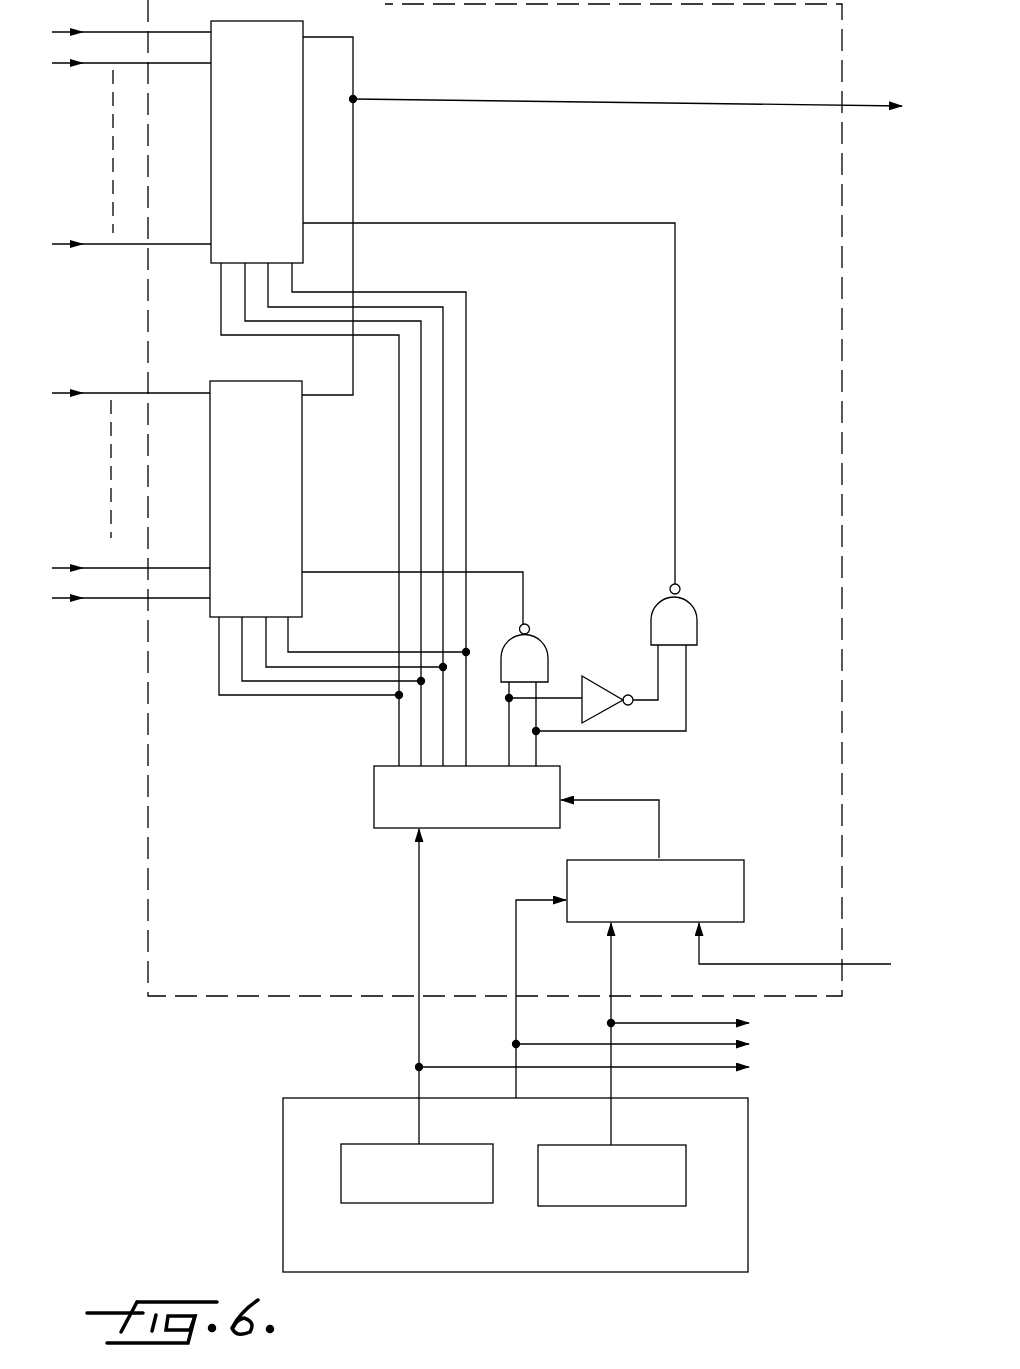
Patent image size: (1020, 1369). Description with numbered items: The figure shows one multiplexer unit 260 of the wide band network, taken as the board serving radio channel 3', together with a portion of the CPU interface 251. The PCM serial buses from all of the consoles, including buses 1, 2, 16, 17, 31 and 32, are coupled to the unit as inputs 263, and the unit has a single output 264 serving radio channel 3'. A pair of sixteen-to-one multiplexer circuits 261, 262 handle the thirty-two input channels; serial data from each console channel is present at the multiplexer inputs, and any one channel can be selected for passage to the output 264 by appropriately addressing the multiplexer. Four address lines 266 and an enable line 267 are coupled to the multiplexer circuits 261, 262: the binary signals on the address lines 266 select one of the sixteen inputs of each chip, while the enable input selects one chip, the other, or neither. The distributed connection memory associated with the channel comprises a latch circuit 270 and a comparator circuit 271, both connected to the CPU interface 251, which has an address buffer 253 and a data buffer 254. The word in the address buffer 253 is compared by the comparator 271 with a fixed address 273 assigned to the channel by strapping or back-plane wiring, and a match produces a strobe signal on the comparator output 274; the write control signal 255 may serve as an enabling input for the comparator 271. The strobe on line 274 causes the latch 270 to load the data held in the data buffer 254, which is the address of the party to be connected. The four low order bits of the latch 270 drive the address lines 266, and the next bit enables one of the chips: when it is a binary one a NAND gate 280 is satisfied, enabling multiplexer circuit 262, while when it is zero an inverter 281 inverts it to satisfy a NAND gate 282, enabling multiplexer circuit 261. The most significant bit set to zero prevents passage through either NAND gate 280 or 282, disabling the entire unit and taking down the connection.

The PCM serial bus 1 is at (131, 22).
The PCM serial bus 2 is at (131, 53).
The PCM serial bus 16 is at (131, 255).
The PCM serial bus 17 is at (131, 382).
The PCM serial bus 31 is at (131, 557).
The PCM serial bus 32 is at (131, 587).
The radio channel 3' is at (873, 90).
The CPU interface 251 is at (283, 1144).
The address buffer 253 is at (650, 1145).
The data buffer 254 is at (372, 1144).
The write control signal 255 is at (516, 1033).
The multiplexer unit 260 is at (140, 772).
The multiplexer circuit 261 is at (211, 167).
The multiplexer circuit 262 is at (210, 474).
The inputs 263 is at (66, 256).
The output 264 is at (853, 110).
The address lines 266 is at (310, 277).
The enable line 267 is at (375, 571).
The latch circuit 270 is at (374, 795).
The comparator circuit 271 is at (705, 860).
The fixed address 273 is at (862, 964).
The comparator output 274 is at (663, 845).
The NAND gate 280 is at (538, 636).
The inverter 281 is at (612, 666).
The NAND gate 282 is at (697, 612).